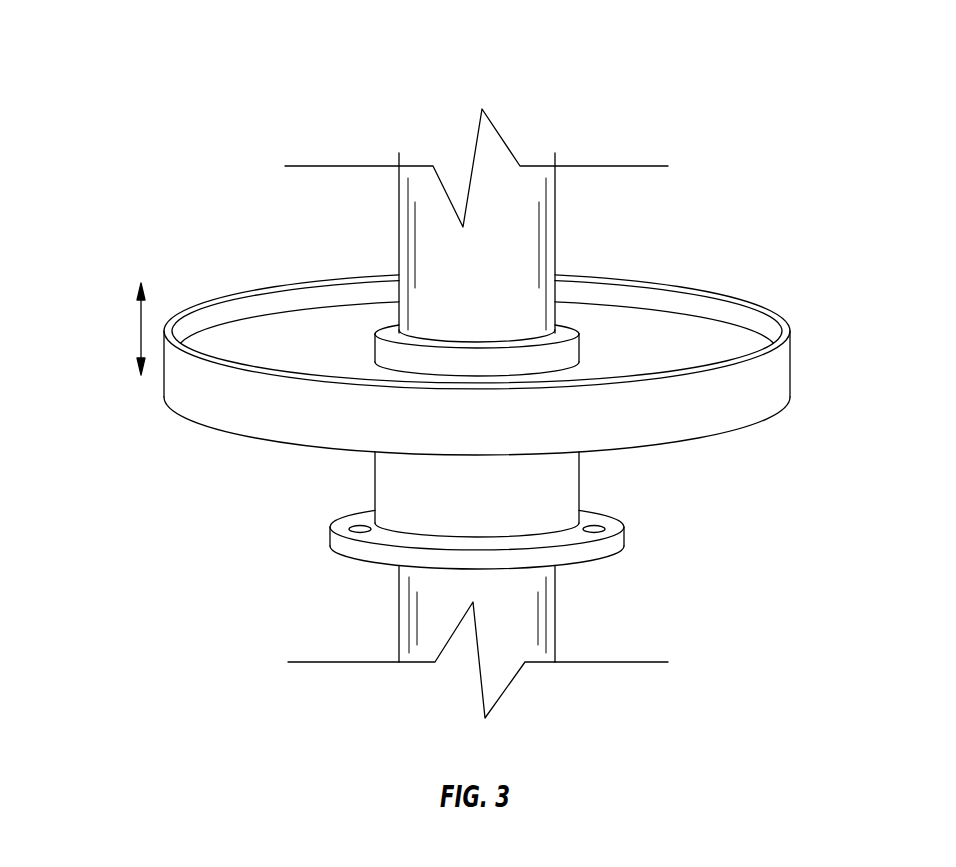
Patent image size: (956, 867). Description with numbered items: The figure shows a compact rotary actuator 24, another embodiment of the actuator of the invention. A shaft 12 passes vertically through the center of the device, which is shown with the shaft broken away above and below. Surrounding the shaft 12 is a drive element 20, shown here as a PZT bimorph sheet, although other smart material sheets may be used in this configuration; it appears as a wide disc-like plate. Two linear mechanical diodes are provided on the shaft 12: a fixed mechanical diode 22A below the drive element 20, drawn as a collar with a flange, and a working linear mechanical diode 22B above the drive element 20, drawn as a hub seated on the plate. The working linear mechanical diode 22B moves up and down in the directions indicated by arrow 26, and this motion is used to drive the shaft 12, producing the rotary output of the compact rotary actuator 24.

The shaft 12 is at (476, 413).
The drive element 20 is at (477, 344).
The fixed mechanical diode 22A is at (454, 510).
The working linear mechanical diode 22B is at (526, 308).
The compact rotary actuator 24 is at (657, 98).
The arrow 26 is at (100, 329).